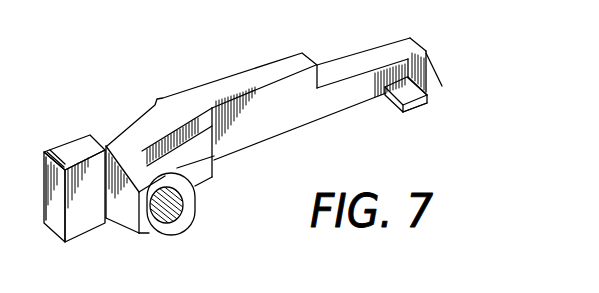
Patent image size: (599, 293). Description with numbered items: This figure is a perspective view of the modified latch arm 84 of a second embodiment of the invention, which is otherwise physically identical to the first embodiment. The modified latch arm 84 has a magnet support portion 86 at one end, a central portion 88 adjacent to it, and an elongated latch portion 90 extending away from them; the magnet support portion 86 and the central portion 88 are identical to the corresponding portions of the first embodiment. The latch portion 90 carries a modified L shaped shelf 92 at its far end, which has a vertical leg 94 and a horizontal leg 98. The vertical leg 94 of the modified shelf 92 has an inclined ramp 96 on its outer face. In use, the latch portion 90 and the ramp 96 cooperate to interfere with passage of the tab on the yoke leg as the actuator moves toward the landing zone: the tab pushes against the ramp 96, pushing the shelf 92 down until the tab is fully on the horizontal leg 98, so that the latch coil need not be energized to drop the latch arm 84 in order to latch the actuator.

The modified latch arm 84 is at (193, 90).
The magnet support portion 86 is at (83, 220).
The central portion 88 is at (200, 198).
The elongated latch portion 90 is at (362, 53).
The modified L shaped shelf 92 is at (440, 100).
The vertical leg 94 is at (442, 87).
The inclined ramp 96 is at (440, 67).
The horizontal leg 98 is at (440, 147).